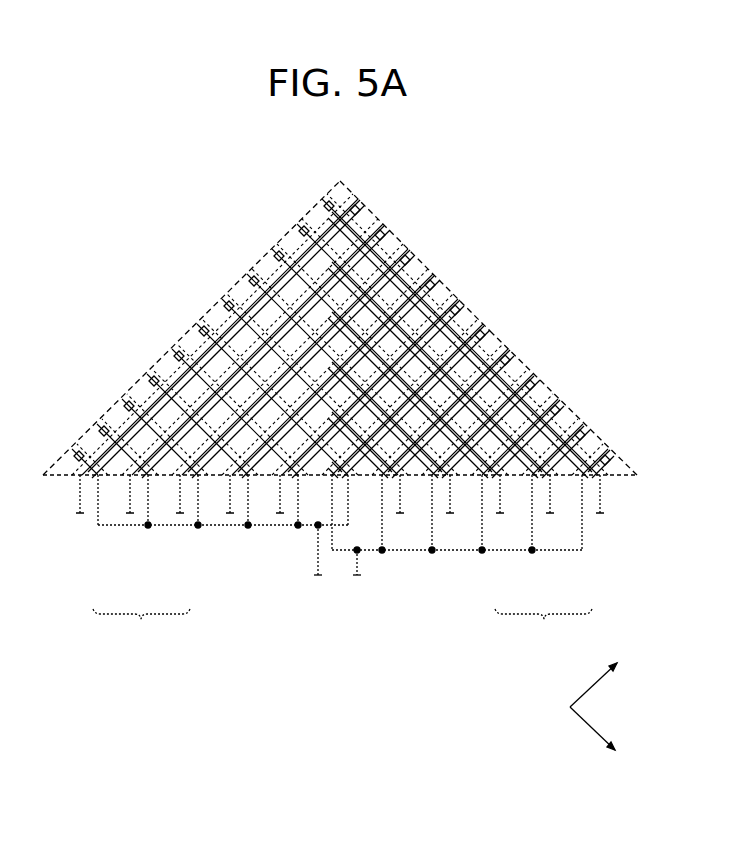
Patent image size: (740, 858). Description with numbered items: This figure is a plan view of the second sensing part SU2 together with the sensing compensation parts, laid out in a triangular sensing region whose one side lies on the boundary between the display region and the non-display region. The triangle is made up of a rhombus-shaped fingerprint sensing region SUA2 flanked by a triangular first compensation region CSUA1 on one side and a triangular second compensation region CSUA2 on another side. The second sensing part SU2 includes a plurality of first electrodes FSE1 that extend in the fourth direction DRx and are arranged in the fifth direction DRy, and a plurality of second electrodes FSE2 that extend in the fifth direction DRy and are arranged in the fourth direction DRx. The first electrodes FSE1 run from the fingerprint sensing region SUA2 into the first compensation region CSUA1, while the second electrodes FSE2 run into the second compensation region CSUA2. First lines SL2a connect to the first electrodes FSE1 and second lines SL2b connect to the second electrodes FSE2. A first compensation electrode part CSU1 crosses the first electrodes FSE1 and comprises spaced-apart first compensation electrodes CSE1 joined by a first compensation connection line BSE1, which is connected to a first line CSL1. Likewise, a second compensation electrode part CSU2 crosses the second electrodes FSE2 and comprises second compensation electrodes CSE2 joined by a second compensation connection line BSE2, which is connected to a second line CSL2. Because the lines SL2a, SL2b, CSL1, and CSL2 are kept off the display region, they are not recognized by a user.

The second sensing part SU2 is at (252, 168).
The first electrodes FSE1 is at (262, 262).
The second electrodes FSE2 is at (288, 236).
The fingerprint sensing region SUA2 is at (411, 250).
The first compensation region CSUA1 is at (130, 385).
The second compensation region CSUA2 is at (547, 388).
The first compensation electrodes CSE1 is at (117, 460).
The first compensation connection line BSE1 is at (162, 527).
The first lines SL2a is at (225, 495).
The first line CSL1 is at (312, 558).
The second line CSL2 is at (360, 558).
The second lines SL2b is at (453, 500).
The second compensation connection line BSE2 is at (518, 552).
The second compensation electrodes CSE2 is at (560, 495).
The first compensation electrode part CSU1 is at (141, 627).
The second compensation electrode part CSU2 is at (543, 627).
The fourth direction DRx is at (610, 678).
The fifth direction DRy is at (601, 742).